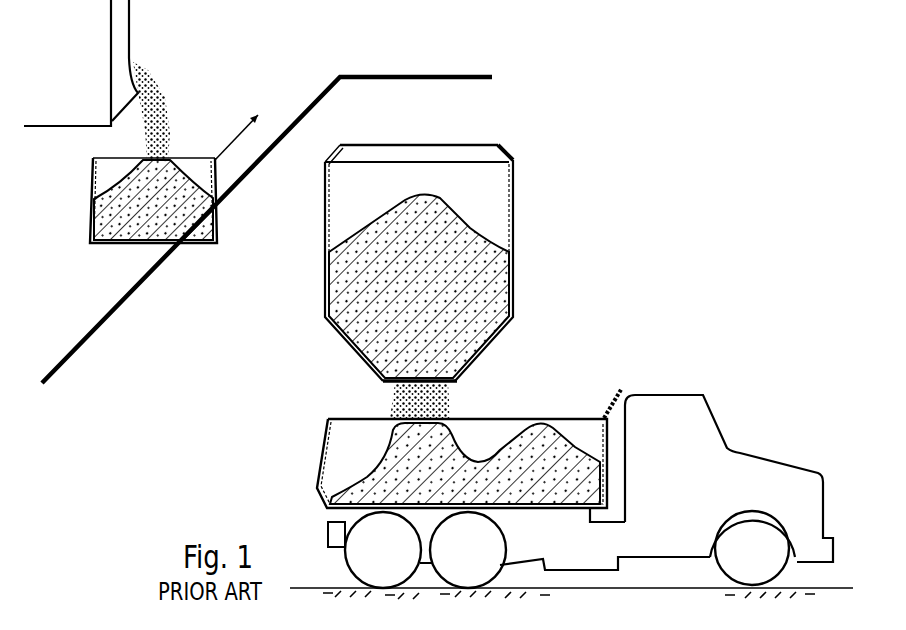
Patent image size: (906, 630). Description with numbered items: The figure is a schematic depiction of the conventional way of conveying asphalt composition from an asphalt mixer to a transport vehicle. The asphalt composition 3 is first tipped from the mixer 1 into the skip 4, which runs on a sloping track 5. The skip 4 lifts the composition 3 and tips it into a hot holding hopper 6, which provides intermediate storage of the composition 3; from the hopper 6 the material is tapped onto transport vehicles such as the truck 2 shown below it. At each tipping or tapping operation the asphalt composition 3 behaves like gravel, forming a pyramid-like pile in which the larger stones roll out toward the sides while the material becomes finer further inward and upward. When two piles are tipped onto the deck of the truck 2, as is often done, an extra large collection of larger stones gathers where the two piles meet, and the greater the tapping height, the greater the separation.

The asphalt mixer 1 is at (54, 60).
The truck 2 is at (668, 448).
The asphalt composition 3 is at (165, 108).
The skip 4 is at (92, 190).
The sloping track 5 is at (305, 108).
The hot holding hopper 6 is at (513, 188).